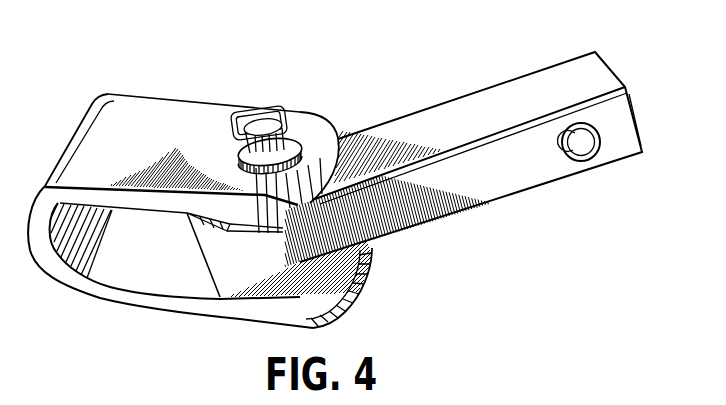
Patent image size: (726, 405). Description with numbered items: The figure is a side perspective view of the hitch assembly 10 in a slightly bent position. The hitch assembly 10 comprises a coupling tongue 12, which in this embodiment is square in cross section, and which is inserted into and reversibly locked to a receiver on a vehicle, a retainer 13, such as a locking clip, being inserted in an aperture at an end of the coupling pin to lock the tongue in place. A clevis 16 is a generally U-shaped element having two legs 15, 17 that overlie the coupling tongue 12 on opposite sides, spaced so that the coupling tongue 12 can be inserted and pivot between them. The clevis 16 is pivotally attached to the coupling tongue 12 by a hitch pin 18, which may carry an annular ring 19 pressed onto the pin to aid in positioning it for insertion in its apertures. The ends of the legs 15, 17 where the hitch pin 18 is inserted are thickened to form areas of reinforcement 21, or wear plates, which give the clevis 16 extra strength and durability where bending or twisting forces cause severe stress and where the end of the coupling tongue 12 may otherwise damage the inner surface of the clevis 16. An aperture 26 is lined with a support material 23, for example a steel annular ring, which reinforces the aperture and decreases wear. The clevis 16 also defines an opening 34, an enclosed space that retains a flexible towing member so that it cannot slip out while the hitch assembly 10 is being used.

The hitch assembly 10 is at (413, 278).
The coupling tongue 12 is at (447, 117).
The retainer 13 is at (262, 123).
The leg 15 is at (158, 139).
The clevis 16 is at (107, 147).
The leg 17 is at (162, 303).
The hitch pin 18 is at (232, 109).
The annular ring 19 is at (293, 130).
The areas of reinforcement 21 is at (233, 203).
The support material 23 is at (573, 160).
The aperture 26 is at (582, 144).
The opening 34 is at (164, 262).